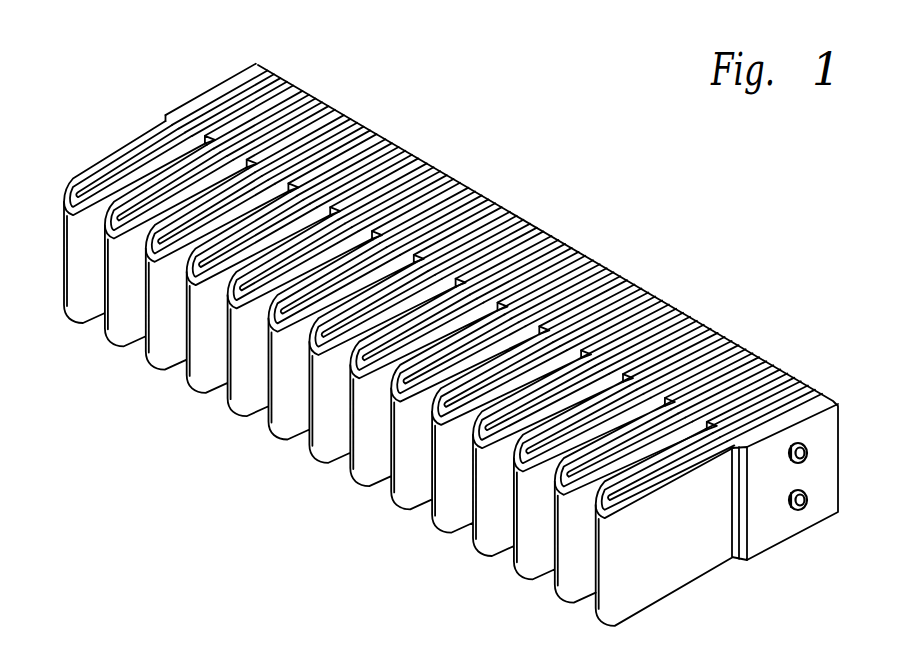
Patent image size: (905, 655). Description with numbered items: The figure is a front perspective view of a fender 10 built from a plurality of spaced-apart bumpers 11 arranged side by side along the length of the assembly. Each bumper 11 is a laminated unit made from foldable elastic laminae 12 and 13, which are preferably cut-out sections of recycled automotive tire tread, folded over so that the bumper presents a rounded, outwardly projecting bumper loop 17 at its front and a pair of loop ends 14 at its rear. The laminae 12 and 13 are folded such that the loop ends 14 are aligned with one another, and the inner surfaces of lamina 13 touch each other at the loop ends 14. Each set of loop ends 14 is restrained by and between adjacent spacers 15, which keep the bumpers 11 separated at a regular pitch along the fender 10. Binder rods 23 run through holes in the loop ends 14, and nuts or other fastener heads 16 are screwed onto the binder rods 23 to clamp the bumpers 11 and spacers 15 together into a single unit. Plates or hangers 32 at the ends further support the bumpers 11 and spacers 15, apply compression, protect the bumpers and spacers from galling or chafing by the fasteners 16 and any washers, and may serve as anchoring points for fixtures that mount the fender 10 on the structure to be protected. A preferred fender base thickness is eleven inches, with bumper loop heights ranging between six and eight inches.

The fender 10 is at (198, 497).
The bumper 11 is at (382, 533).
The foldable elastic lamina 12 is at (633, 514).
The foldable elastic lamina 13 is at (670, 466).
The loop ends 14 is at (339, 66).
The spacer 15 is at (486, 186).
The fastener head 16 is at (797, 512).
The bumper loop 17 is at (106, 118).
The binder rod 23 is at (810, 503).
The plate 32 is at (186, 108).